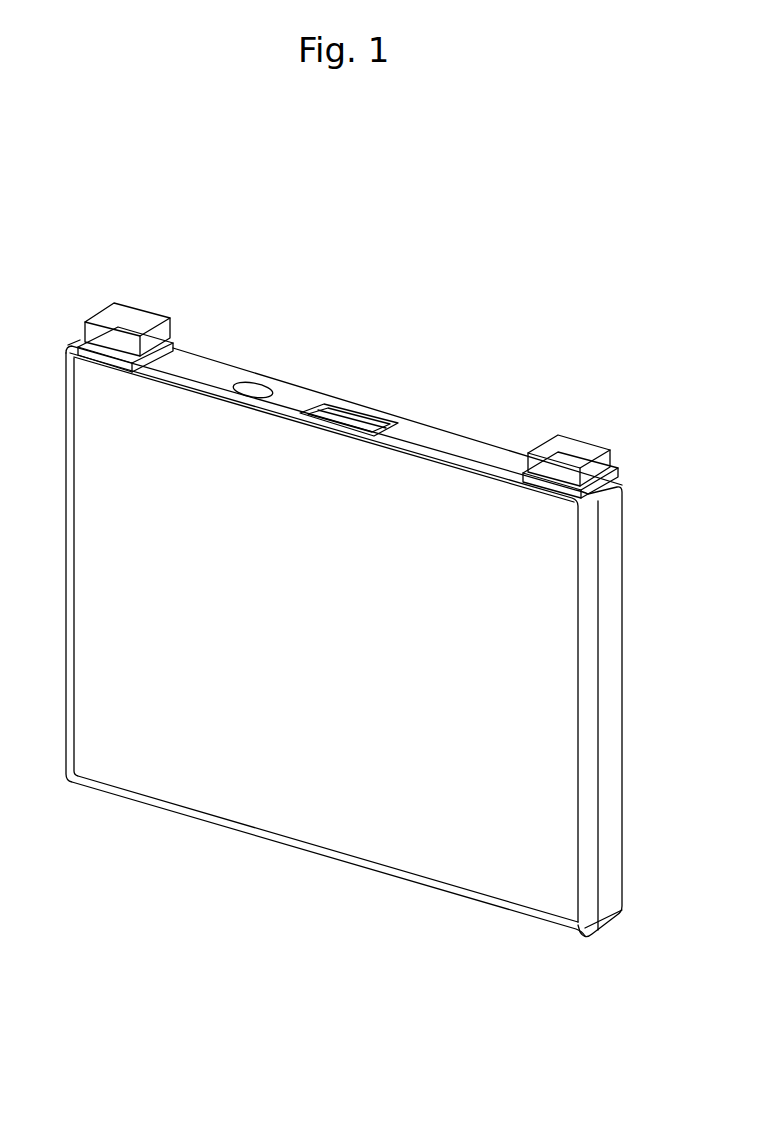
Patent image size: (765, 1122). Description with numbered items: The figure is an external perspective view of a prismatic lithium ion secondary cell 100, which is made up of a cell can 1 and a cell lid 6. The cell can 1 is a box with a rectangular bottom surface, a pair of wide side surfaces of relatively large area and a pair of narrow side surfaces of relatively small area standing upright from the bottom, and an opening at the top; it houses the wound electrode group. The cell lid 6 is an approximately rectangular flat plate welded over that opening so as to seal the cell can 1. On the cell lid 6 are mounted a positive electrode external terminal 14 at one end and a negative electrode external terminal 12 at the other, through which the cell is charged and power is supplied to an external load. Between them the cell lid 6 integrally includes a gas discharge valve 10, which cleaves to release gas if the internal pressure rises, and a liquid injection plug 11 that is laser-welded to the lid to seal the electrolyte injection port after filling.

The prismatic lithium ion secondary cell 100 is at (515, 292).
The cell can 1 is at (291, 822).
The cell lid 6 is at (445, 440).
The gas discharge valve 10 is at (324, 405).
The liquid injection plug 11 is at (255, 388).
The negative electrode external terminal 12 is at (588, 458).
The positive electrode external terminal 14 is at (131, 320).